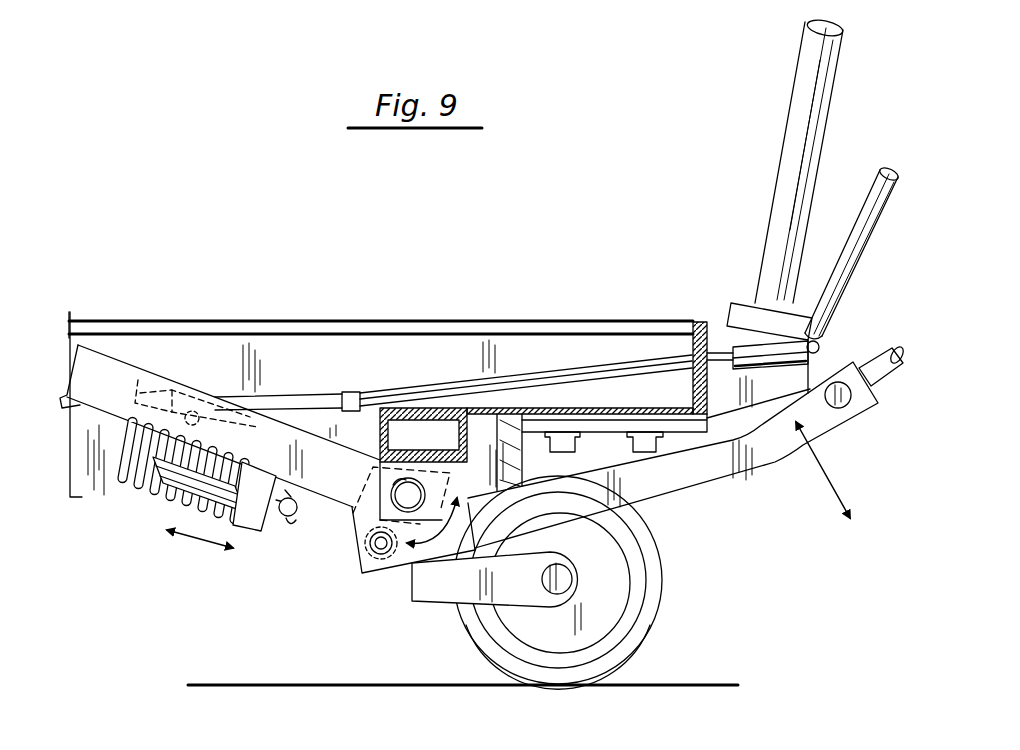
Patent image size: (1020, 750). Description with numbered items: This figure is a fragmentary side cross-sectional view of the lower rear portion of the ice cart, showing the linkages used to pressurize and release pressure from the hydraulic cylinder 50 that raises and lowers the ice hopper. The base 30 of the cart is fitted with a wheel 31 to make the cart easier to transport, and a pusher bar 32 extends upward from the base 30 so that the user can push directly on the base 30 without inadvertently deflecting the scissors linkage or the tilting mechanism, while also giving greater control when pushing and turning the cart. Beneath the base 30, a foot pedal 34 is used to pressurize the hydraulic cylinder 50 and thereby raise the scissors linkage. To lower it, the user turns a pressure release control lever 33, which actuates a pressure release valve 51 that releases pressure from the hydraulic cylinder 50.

The base 30 is at (417, 330).
The wheel 31 is at (660, 568).
The pusher bar 32 is at (795, 145).
The pressure release control lever 33 is at (870, 210).
The foot pedal 34 is at (828, 420).
The hydraulic cylinder 50 is at (99, 472).
The pressure release valve 51 is at (150, 398).